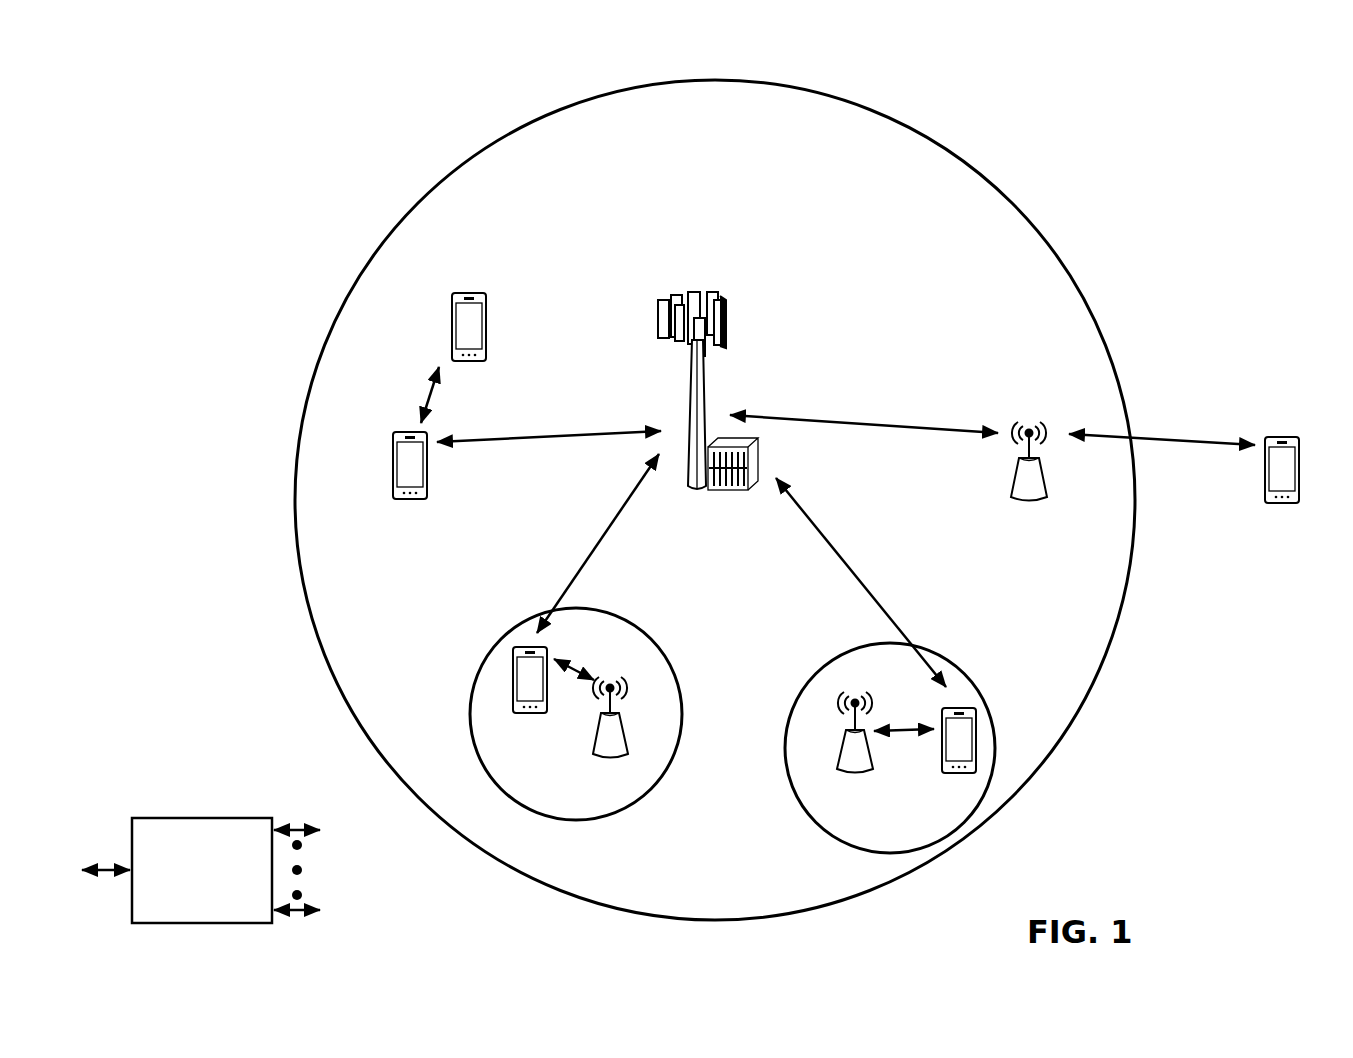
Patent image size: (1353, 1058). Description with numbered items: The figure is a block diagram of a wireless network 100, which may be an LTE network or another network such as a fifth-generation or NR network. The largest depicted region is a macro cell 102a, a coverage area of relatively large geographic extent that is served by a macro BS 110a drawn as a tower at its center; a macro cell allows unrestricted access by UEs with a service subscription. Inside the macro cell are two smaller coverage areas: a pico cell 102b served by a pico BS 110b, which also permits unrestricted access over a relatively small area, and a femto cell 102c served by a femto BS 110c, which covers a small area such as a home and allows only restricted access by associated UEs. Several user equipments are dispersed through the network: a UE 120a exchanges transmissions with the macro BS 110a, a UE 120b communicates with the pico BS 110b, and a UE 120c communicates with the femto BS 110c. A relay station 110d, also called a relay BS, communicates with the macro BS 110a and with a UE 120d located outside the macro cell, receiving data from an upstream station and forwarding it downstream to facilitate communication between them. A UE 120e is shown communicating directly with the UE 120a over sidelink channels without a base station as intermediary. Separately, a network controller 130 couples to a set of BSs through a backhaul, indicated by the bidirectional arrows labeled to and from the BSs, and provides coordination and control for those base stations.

The wireless network 100 is at (185, 80).
The macro cell 102a is at (993, 190).
The pico cell 102b is at (672, 655).
The femto cell 102c is at (818, 656).
The macro BS 110a is at (702, 282).
The pico BS 110b is at (636, 745).
The femto BS 110c is at (836, 762).
The relay station 110d is at (1030, 426).
The UE 120a is at (392, 462).
The UE 120b is at (520, 714).
The UE 120c is at (942, 774).
The UE 120d is at (1297, 436).
The UE 120e is at (452, 318).
The network controller 130 is at (200, 816).